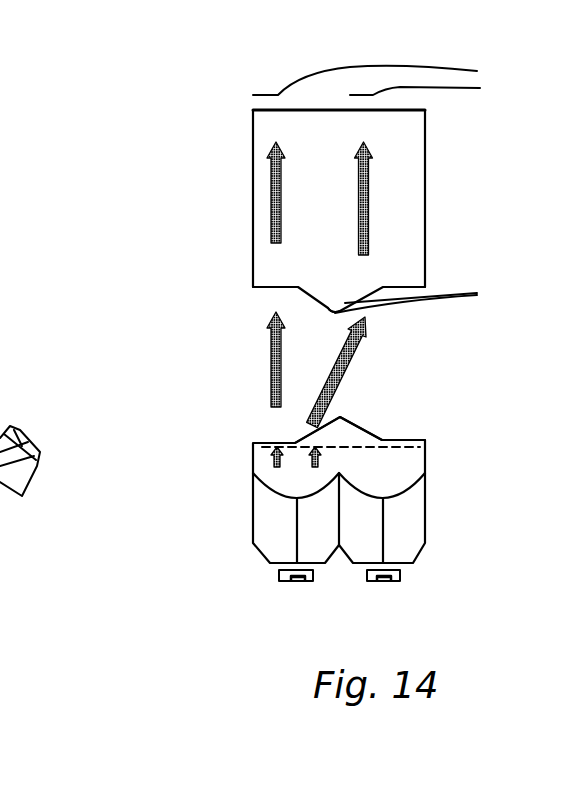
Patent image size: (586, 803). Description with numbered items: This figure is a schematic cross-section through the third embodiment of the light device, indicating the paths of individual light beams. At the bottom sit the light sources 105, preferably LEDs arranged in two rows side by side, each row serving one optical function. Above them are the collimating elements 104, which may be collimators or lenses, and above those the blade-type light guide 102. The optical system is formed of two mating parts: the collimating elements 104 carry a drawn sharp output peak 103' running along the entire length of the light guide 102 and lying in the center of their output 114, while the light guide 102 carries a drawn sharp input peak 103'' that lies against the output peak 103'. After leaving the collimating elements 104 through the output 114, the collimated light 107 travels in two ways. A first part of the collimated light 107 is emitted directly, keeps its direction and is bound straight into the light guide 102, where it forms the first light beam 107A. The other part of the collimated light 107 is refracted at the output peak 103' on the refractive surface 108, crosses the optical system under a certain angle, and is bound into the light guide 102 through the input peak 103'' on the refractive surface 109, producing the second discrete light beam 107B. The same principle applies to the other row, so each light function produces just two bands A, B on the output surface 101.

The band A is at (378, 76).
The band B is at (427, 89).
The output surface 101 is at (395, 107).
The light guide 102 is at (395, 185).
The input peak 103'' is at (436, 272).
The output peak 103' is at (444, 464).
The collimating elements 104 is at (323, 505).
The light sources 105 is at (307, 581).
The collimated light 107 is at (300, 453).
The first light beam 107A is at (271, 200).
The second discrete light beam 107B is at (369, 167).
The refractive surface 108 is at (330, 420).
The refractive surface 109 is at (430, 298).
The output 114 is at (405, 443).